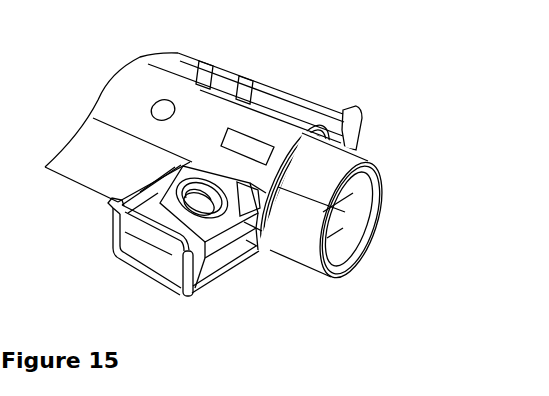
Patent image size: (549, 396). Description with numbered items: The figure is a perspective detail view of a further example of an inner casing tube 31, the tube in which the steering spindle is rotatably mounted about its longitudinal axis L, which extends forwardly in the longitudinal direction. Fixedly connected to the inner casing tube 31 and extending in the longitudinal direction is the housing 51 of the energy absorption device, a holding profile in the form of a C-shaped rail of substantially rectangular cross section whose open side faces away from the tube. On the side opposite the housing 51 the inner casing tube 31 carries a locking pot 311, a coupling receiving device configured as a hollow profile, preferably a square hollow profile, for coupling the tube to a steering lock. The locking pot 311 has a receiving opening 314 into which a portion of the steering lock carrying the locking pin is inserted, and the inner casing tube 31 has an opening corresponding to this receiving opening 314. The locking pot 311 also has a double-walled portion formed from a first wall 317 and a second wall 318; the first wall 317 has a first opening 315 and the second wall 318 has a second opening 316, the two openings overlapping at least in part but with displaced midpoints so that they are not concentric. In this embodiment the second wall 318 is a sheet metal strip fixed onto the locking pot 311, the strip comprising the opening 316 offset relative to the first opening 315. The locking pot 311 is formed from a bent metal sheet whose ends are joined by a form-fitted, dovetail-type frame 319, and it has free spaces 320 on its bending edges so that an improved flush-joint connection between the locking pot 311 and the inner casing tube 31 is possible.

The inner casing tube 31 is at (112, 162).
The housing 51 is at (288, 110).
The locking pot 311 is at (212, 270).
The receiving opening 314 is at (167, 268).
The first opening 315 is at (198, 200).
The second opening 316 is at (226, 190).
The first wall 317 is at (167, 240).
The second wall 318 is at (228, 222).
The frame 319 is at (108, 222).
The free space 320 is at (168, 162).
The longitudinal axis L is at (382, 234).